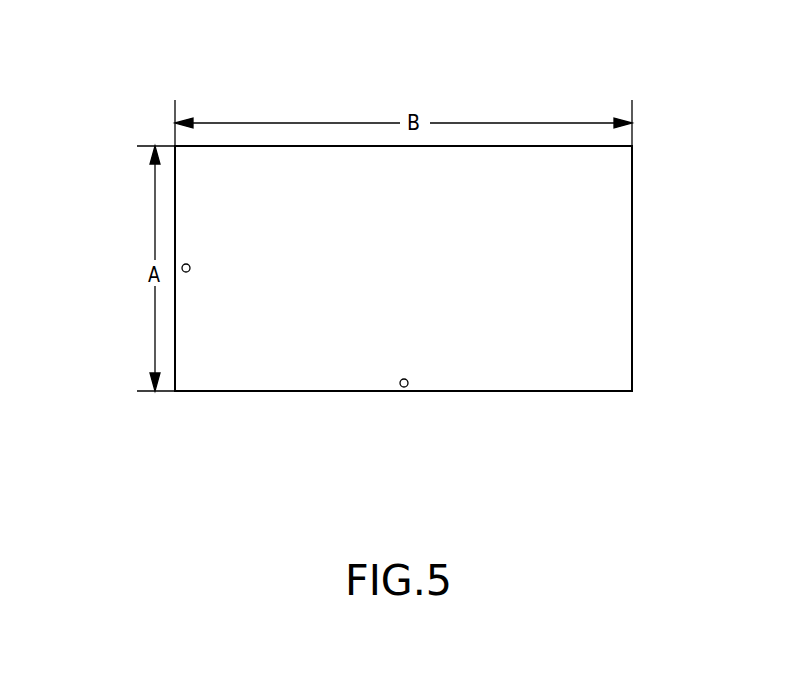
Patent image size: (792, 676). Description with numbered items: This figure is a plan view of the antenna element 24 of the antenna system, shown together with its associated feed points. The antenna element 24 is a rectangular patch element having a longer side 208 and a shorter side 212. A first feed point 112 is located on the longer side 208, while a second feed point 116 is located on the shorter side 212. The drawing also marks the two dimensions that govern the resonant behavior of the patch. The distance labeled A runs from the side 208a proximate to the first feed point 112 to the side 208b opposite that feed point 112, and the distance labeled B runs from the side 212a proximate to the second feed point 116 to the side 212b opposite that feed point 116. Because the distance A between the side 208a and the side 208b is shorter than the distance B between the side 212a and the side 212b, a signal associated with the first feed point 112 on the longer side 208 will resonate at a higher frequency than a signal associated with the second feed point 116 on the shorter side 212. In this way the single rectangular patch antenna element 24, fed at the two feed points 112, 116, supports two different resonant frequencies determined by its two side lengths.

The antenna element 24 is at (435, 157).
The first feed point 112 is at (408, 385).
The second feed point 116 is at (181, 266).
The longer side 208 is at (527, 392).
The side proximate to the first feed point 208a is at (601, 392).
The side opposite the first feed point 208b is at (572, 146).
The shorter side 212 is at (632, 257).
The side proximate to the second feed point 212a is at (175, 346).
The side opposite the second feed point 212b is at (632, 340).